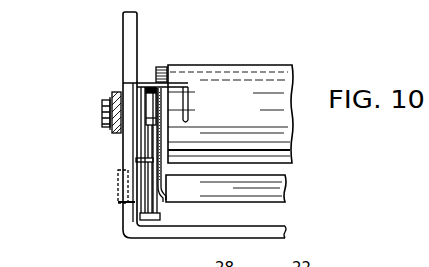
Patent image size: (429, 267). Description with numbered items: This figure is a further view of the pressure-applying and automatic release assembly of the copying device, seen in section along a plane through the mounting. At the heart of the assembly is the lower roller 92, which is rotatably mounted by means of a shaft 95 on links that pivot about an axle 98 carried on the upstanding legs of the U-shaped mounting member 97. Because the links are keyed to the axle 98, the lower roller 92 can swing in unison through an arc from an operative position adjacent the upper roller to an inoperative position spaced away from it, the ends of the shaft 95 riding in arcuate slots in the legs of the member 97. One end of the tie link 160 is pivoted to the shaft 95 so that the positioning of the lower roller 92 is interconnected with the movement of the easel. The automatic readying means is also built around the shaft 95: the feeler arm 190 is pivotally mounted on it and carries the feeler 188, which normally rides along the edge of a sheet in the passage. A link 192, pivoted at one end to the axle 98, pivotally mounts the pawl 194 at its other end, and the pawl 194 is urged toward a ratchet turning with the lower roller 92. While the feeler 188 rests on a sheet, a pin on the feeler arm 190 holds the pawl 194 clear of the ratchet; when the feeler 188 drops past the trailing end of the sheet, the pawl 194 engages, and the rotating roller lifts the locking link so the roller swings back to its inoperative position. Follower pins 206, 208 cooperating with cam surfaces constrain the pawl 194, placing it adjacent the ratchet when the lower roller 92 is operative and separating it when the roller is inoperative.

The lower roller 92 is at (278, 72).
The shaft 95 is at (102, 112).
The U-shaped mounting member 97 is at (130, 181).
The axle 98 is at (290, 187).
The tie link 160 is at (112, 93).
The feeler 188 is at (188, 103).
The feeler arm 190 is at (172, 70).
The link 192 is at (122, 202).
The pawl 194 is at (165, 185).
The follower pin 206 is at (136, 159).
The follower pin 208 is at (148, 222).